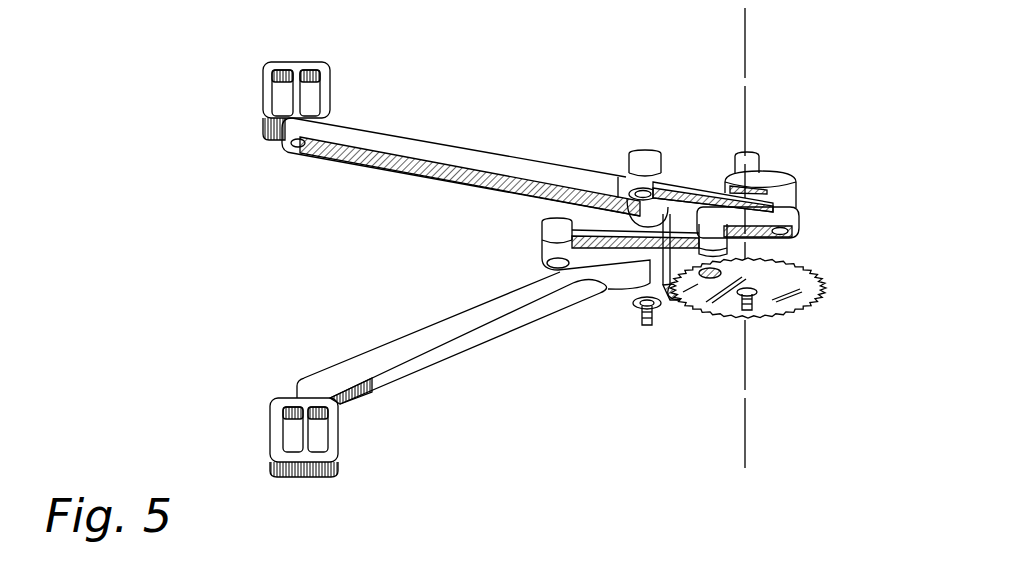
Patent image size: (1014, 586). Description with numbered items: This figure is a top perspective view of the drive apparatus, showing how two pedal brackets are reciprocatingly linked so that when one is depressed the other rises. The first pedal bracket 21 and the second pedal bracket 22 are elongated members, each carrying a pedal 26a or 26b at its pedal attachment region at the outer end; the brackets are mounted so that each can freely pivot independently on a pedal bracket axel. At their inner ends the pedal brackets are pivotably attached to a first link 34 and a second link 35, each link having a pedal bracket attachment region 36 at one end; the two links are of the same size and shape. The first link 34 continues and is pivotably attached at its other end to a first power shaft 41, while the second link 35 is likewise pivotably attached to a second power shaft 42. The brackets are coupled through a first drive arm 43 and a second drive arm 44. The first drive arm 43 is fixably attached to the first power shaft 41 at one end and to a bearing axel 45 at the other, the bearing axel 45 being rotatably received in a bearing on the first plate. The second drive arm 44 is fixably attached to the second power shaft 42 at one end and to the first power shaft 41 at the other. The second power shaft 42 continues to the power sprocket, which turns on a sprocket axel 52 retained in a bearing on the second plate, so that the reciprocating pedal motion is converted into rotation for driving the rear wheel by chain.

The first pedal bracket 21 is at (470, 150).
The second pedal bracket 22 is at (408, 352).
The pedal 26a is at (327, 70).
The pedal 26b is at (297, 477).
The first link 34 is at (697, 185).
The second link 35 is at (638, 230).
The pedal bracket attachment region 36 is at (636, 158).
The first power shaft 41 is at (799, 230).
The second power shaft 42 is at (742, 253).
The first drive arm 43 is at (772, 180).
The second drive arm 44 is at (758, 220).
The bearing axel 45 is at (752, 160).
The sprocket axel 52 is at (750, 310).